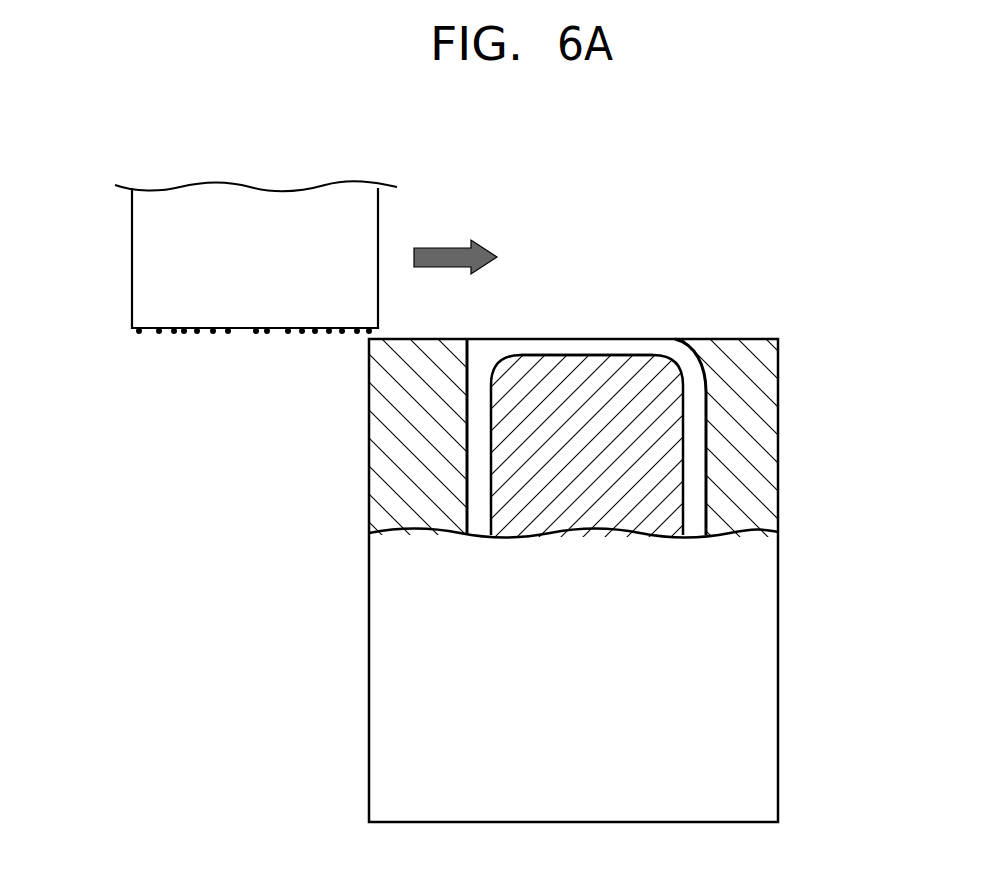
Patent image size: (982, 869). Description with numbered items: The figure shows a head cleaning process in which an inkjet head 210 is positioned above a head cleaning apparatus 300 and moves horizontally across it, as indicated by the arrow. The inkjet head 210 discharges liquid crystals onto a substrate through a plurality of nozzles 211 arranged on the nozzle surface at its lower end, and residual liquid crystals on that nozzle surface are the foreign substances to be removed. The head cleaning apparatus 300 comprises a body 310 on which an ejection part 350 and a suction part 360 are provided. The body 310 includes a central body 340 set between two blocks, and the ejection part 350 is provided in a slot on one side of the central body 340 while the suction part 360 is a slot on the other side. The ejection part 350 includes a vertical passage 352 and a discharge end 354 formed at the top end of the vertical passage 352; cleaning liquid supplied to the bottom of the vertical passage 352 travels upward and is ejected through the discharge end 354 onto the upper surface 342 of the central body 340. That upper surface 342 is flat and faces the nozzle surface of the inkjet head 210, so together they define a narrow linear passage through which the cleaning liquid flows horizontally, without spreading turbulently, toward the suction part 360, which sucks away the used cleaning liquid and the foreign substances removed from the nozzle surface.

The inkjet head 210 is at (143, 254).
The nozzles 211 is at (150, 334).
The head cleaning apparatus 300 is at (346, 575).
The body 310 is at (780, 672).
The central body 340 is at (488, 489).
The upper surface 342 is at (605, 354).
The ejection part 350 is at (798, 438).
The vertical passage 352 is at (695, 500).
The discharge end 354 is at (776, 374).
The suction part 360 is at (478, 425).